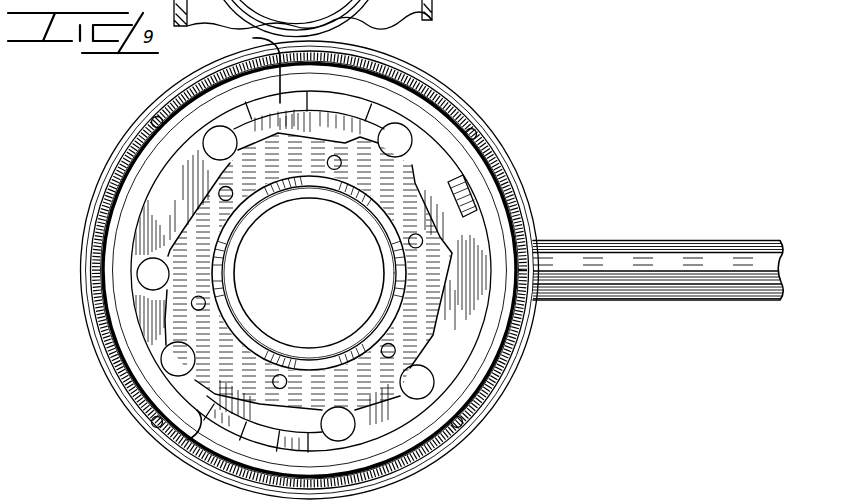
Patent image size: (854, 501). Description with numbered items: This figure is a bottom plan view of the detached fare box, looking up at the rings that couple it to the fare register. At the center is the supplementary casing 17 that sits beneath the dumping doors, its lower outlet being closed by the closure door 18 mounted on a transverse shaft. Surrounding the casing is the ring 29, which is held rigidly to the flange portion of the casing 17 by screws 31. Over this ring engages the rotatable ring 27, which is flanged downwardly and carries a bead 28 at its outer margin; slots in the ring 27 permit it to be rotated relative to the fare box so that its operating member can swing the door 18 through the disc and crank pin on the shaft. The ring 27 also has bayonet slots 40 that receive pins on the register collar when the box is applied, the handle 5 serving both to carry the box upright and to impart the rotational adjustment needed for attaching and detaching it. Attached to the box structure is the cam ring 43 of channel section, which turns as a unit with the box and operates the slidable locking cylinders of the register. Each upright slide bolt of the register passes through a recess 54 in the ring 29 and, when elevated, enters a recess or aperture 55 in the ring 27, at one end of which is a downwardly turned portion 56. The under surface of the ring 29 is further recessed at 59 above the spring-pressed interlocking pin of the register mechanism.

The handle 5 is at (598, 264).
The supplementary casing 17 is at (253, 332).
The closure door 18 is at (309, 273).
The rotatable ring 27 is at (413, 441).
The bead 28 is at (505, 184).
The ring 29 is at (458, 341).
The screws 31 is at (218, 145).
The bayonet slots 40 is at (478, 136).
The cam ring 43 is at (311, 268).
The recess 54 is at (362, 110).
The recess or aperture 55 is at (297, 100).
The spring clip 56 is at (218, 494).
The recess 59 is at (472, 202).